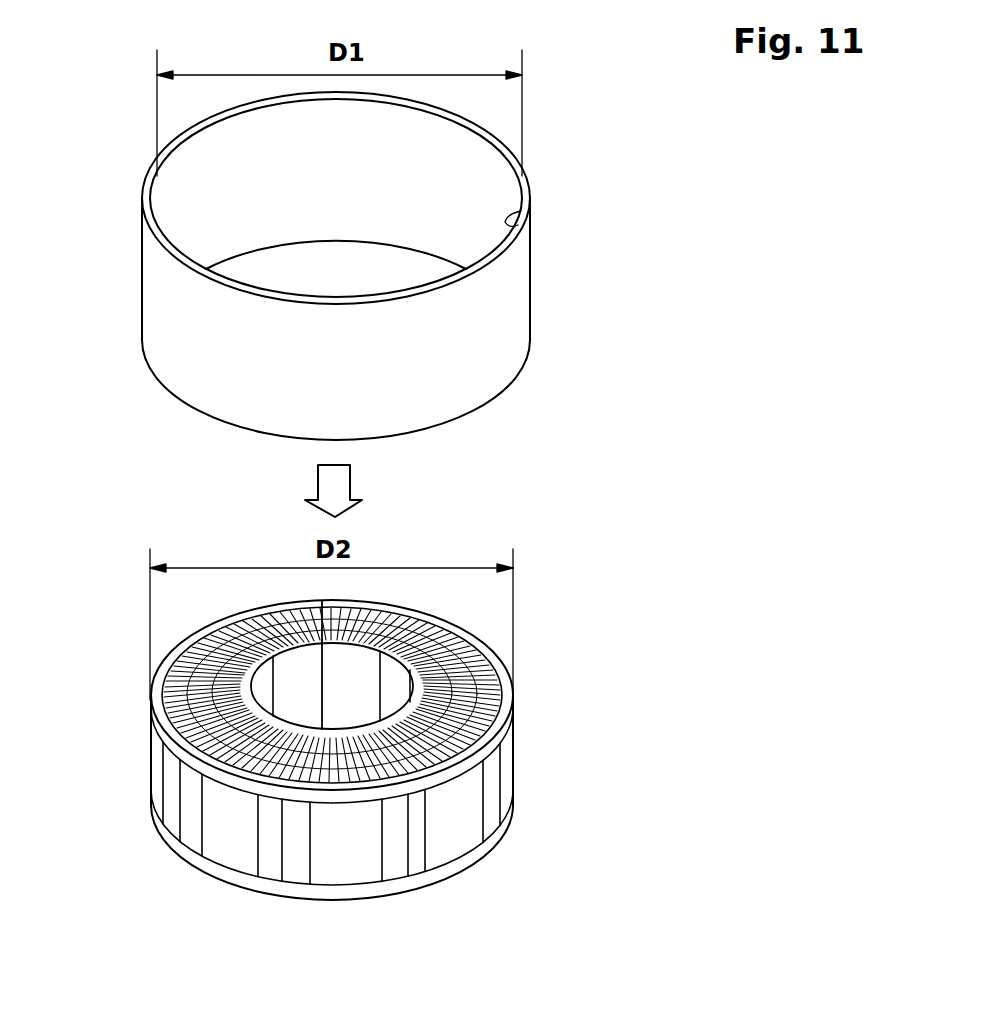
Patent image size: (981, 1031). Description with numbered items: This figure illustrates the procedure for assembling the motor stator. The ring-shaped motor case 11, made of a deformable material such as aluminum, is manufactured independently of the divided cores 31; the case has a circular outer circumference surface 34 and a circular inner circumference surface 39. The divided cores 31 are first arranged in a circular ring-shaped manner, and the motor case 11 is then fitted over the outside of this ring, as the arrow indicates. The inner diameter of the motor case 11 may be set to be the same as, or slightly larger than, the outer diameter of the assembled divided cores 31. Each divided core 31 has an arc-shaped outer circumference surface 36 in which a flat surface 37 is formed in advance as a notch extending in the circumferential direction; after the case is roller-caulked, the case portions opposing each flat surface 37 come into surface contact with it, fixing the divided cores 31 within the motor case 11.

The motor case 11 is at (535, 278).
The circular outer circumference surface 34 is at (490, 350).
The circular inner circumference surface 39 is at (521, 211).
The divided core 31 is at (187, 708).
The arc-shaped outer circumference surface 36 is at (162, 830).
The flat surface 37 is at (147, 783).